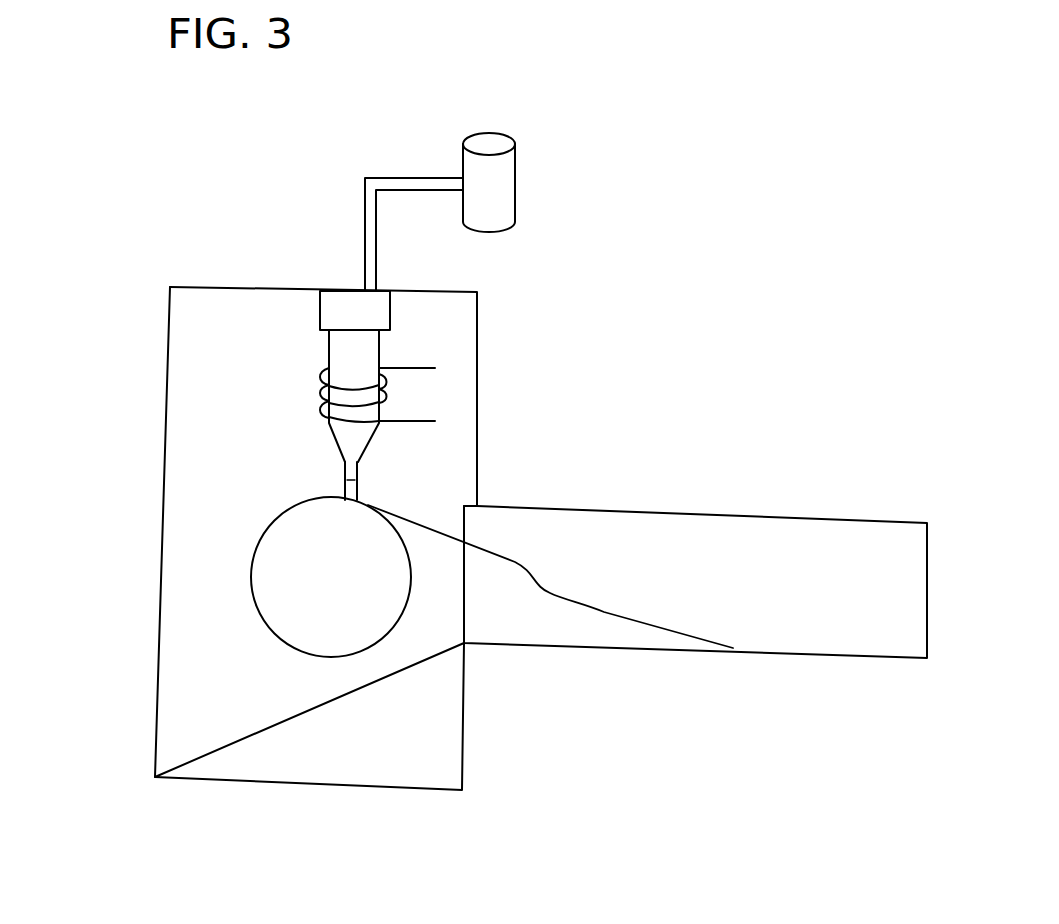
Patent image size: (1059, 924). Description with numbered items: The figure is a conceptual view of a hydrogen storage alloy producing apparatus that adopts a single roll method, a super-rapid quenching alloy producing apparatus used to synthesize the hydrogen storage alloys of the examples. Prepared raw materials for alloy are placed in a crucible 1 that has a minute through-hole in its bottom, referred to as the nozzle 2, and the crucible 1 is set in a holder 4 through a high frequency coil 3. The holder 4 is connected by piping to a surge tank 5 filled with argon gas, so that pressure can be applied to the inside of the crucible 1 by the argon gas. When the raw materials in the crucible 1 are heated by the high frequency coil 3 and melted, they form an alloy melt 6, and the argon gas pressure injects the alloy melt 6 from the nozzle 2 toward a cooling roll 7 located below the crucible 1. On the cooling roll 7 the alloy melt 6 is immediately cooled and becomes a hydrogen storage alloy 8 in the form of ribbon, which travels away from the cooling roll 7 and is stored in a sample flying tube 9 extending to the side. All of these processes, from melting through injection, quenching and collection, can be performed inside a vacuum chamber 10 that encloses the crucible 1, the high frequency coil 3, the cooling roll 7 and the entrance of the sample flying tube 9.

The crucible 1 is at (380, 352).
The nozzle 2 is at (333, 440).
The high frequency coil 3 is at (420, 423).
The holder 4 is at (392, 318).
The surge tank 5 is at (513, 193).
The alloy melt 6 is at (345, 478).
The cooling roll 7 is at (383, 640).
The hydrogen storage alloy 8 is at (472, 543).
The sample flying tube 9 is at (613, 645).
The vacuum chamber 10 is at (460, 778).